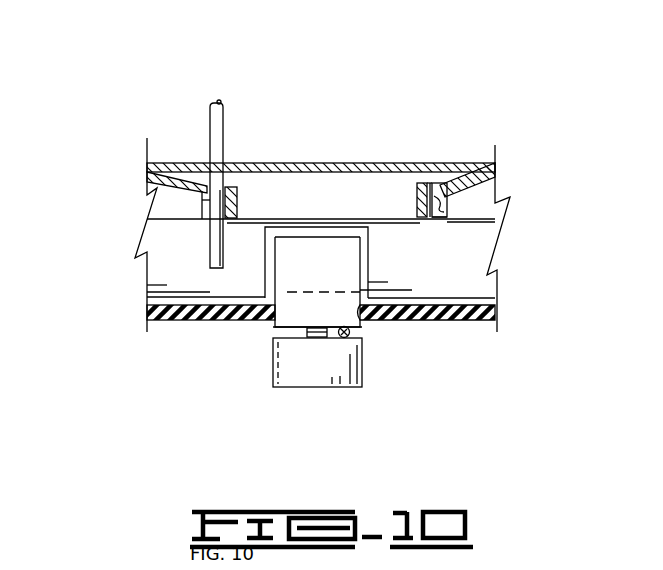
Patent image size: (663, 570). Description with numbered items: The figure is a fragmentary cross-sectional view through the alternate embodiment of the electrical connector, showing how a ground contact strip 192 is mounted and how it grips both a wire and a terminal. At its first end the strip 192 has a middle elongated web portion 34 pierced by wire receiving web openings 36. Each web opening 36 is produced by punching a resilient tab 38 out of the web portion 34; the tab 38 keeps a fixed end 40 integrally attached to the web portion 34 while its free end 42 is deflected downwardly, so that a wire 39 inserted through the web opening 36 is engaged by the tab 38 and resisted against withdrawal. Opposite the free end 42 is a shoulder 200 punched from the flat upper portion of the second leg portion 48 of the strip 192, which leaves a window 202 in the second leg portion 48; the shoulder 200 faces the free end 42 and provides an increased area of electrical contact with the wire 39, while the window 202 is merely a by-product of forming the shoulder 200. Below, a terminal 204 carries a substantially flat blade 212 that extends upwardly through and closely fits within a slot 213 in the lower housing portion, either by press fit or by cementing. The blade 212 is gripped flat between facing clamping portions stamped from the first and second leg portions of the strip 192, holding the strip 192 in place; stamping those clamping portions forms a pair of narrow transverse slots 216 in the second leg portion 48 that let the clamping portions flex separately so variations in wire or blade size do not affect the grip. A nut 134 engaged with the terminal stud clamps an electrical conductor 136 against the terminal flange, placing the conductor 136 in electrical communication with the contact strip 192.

The web portion 34 is at (340, 163).
The web opening 36 is at (437, 187).
The resilient tab 38 is at (446, 184).
The wire 39 is at (218, 119).
The fixed end 40 is at (482, 166).
The free end 42 is at (447, 212).
The second leg portion 48 is at (468, 268).
The nut 134 is at (310, 370).
The electrical conductor 136 is at (352, 328).
The ground contact strip 192 is at (303, 158).
The shoulder 200 is at (242, 188).
The window 202 is at (223, 204).
The terminal 204 is at (273, 327).
The blade 212 is at (263, 320).
The slot 213 is at (362, 320).
The transverse slots 216 is at (263, 258).